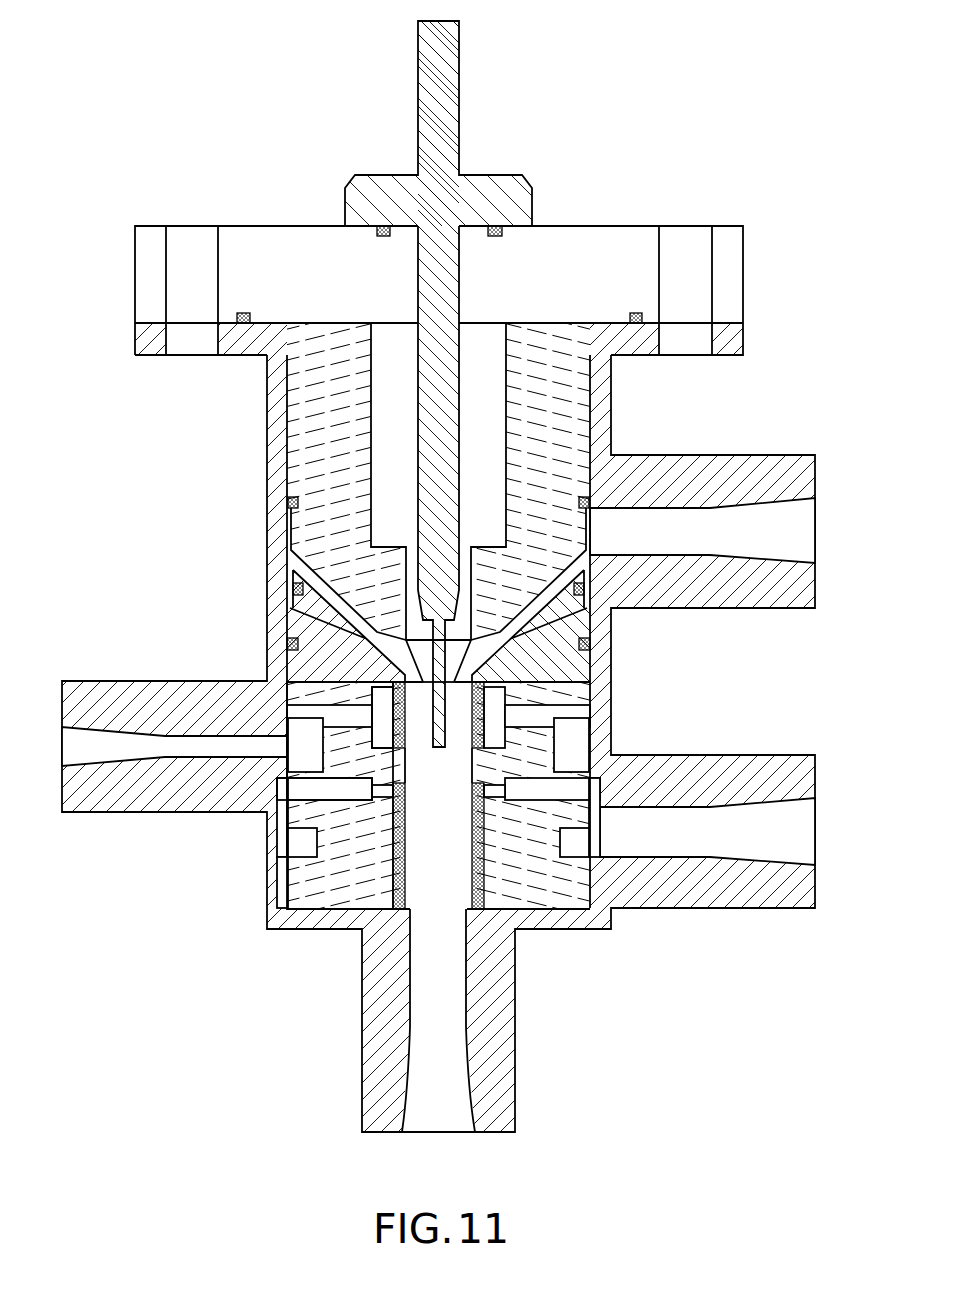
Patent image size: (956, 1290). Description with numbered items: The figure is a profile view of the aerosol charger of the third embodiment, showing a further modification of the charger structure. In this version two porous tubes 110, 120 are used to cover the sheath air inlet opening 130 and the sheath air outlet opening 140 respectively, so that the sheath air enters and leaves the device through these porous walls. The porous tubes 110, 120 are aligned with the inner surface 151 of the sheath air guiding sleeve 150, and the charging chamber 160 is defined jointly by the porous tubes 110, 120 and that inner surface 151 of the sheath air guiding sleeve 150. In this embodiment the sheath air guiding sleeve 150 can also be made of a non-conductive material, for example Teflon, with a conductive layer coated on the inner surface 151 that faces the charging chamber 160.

The porous tube 110 is at (477, 715).
The porous tube 120 is at (478, 877).
The sheath air inlet opening 130 is at (385, 712).
The sheath air outlet opening 140 is at (385, 790).
The sheath air guiding sleeve 150 is at (347, 762).
The inner surface 151 is at (405, 767).
The charging chamber 160 is at (445, 840).